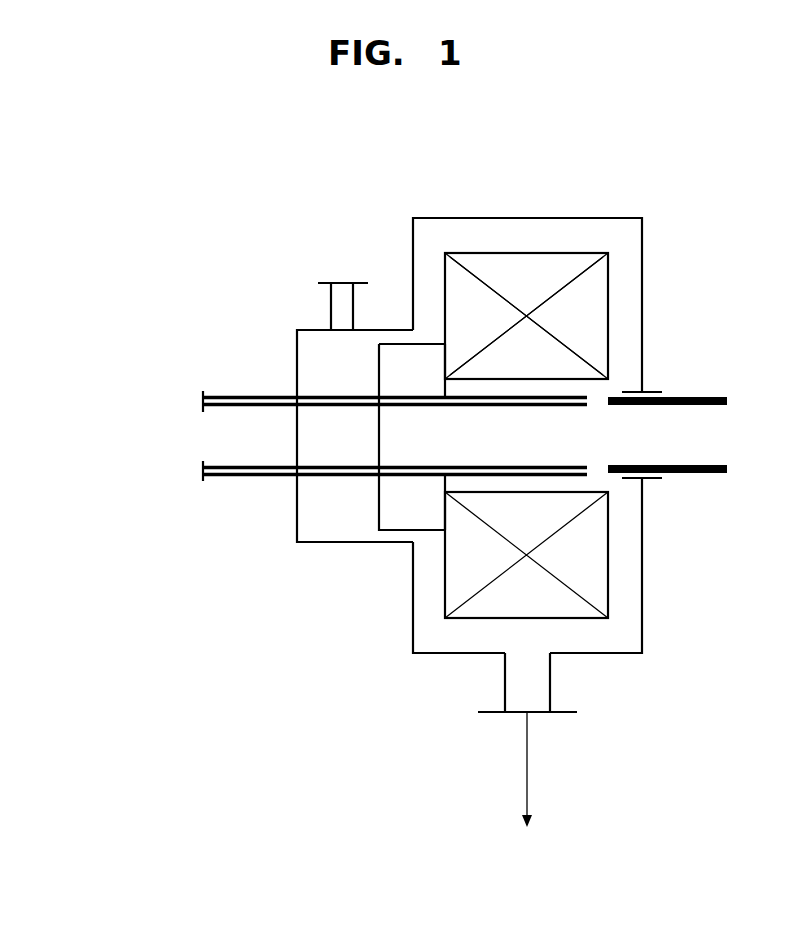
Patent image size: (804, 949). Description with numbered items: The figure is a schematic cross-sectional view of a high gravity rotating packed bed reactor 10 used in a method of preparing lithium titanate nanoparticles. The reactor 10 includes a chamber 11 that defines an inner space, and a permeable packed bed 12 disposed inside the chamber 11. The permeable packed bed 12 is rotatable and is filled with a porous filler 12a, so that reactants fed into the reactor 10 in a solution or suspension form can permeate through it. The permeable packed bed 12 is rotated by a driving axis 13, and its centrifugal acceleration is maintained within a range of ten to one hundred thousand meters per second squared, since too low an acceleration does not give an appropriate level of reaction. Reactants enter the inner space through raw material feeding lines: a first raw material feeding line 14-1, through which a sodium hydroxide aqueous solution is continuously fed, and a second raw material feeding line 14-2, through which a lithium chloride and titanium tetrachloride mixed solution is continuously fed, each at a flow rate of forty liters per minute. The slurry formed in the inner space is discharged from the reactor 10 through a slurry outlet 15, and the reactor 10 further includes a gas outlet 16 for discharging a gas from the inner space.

The high gravity rotating packed bed reactor 10 is at (606, 188).
The chamber 11 is at (492, 217).
The permeable packed bed 12 is at (611, 340).
The porous filler 12a is at (588, 292).
The driving axis 13 is at (700, 398).
The first raw material feeding line 14-1 is at (171, 402).
The second raw material feeding line 14-2 is at (171, 470).
The slurry outlet 15 is at (540, 690).
The gas outlet 16 is at (332, 300).